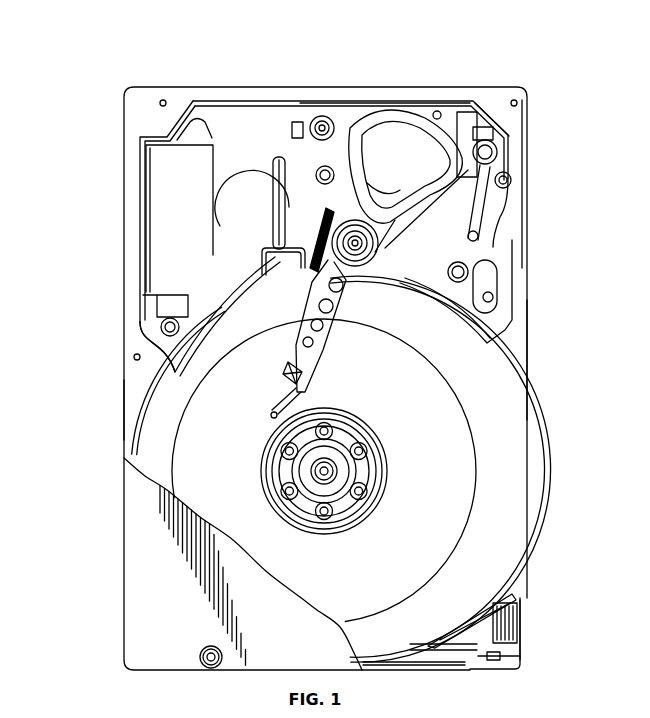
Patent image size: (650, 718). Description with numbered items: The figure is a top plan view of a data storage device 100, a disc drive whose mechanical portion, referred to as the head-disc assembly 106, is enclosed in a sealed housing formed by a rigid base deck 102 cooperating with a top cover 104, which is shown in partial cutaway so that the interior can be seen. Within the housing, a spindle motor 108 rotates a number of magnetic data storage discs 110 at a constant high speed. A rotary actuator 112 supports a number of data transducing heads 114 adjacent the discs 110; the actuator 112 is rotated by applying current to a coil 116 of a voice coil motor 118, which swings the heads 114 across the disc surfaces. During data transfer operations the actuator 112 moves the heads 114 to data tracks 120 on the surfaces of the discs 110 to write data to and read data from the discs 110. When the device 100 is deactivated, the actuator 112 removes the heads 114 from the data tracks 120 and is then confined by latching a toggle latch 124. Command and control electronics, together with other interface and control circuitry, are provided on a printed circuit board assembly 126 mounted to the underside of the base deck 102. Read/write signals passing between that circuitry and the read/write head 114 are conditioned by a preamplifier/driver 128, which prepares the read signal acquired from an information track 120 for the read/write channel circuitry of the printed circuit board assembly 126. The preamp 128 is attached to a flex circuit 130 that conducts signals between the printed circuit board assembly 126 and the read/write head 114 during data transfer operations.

The data storage device 100 is at (182, 67).
The base deck 102 is at (132, 192).
The top cover 104 is at (150, 543).
The head-disc assembly 106 is at (529, 408).
The spindle motor 108 is at (338, 454).
The magnetic data storage discs 110 is at (413, 484).
The rotary actuator 112 is at (332, 350).
The data transducing heads 114 is at (270, 412).
The coil 116 is at (397, 122).
The voice coil motor 118 is at (421, 103).
The data tracks 120 is at (133, 360).
The toggle latch 124 is at (513, 129).
The printed circuit board assembly 126 is at (116, 385).
The preamplifier/driver 128 is at (306, 223).
The flex circuit 130 is at (262, 236).